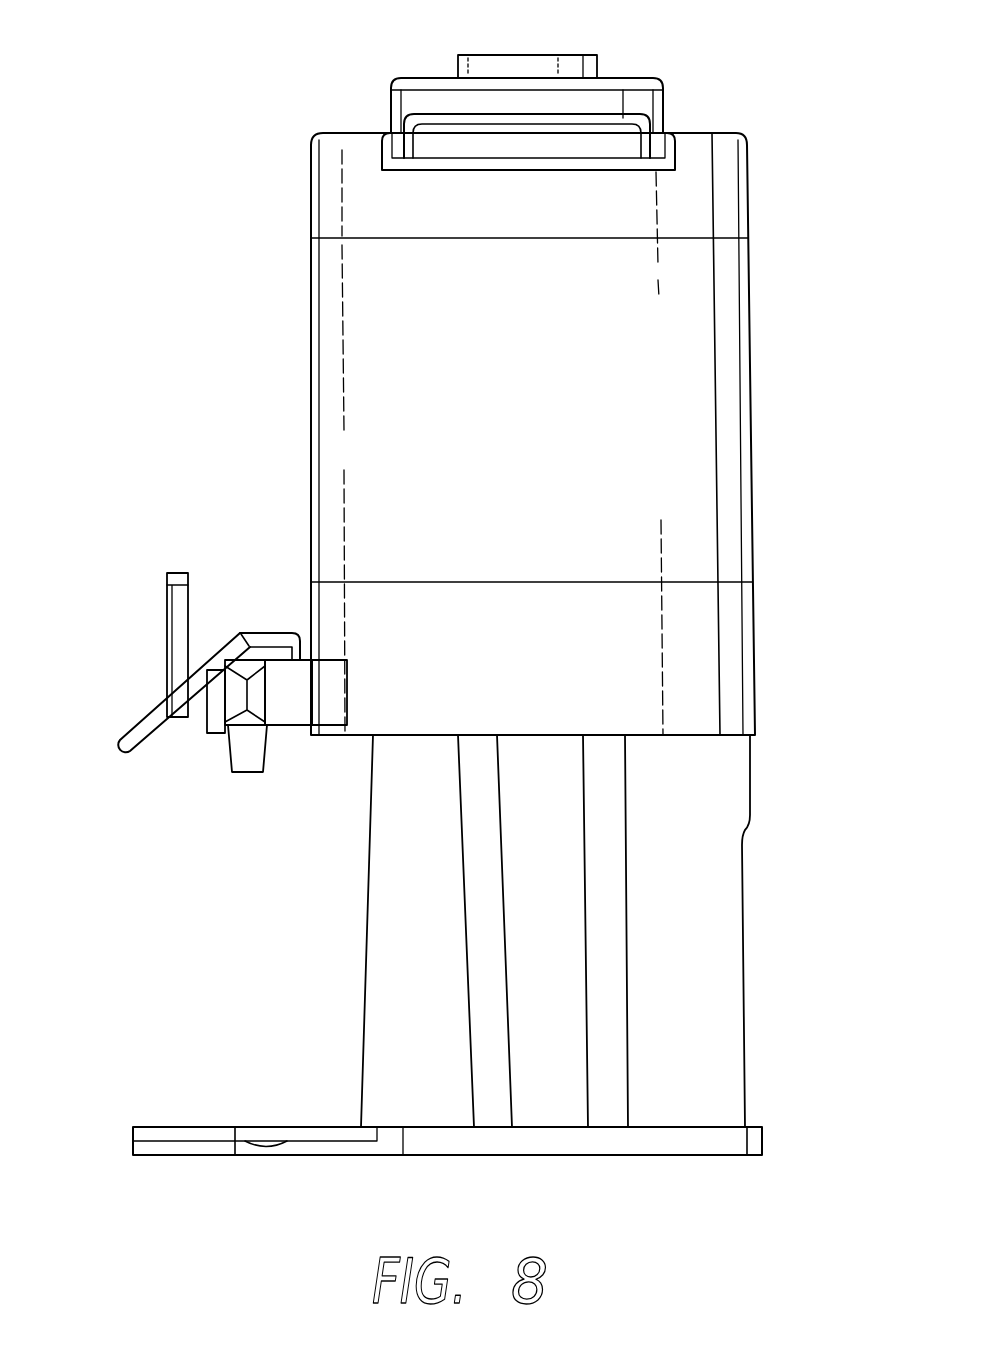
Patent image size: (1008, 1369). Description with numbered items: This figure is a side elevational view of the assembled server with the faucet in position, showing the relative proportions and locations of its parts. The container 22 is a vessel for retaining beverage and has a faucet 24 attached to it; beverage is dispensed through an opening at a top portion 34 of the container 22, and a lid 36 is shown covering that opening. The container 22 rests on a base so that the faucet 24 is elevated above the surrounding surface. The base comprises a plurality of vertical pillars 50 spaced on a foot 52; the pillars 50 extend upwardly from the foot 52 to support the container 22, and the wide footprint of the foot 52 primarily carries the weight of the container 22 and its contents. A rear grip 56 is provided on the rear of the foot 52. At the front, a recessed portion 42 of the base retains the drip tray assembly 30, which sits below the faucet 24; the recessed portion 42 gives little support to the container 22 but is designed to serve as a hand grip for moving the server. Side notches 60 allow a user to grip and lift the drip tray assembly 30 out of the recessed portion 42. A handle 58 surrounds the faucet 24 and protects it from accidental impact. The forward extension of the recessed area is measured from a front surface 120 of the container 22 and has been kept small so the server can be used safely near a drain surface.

The container 22 is at (788, 474).
The faucet 24 is at (210, 738).
The drip tray assembly 30 is at (185, 1097).
The top portion 34 is at (747, 190).
The lid 36 is at (660, 80).
The recessed portion 42 is at (133, 1152).
The pillars 50 is at (707, 937).
The foot 52 is at (578, 1142).
The rear grip 56 is at (763, 1140).
The handle 58 is at (137, 728).
The side notches 60 is at (263, 1147).
The front surface 120 is at (312, 435).